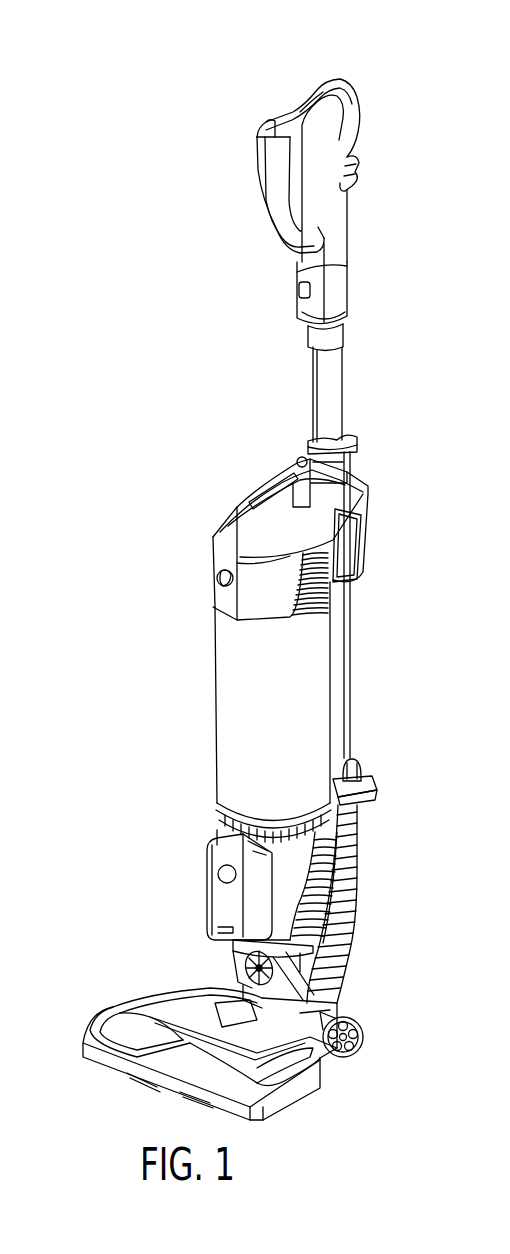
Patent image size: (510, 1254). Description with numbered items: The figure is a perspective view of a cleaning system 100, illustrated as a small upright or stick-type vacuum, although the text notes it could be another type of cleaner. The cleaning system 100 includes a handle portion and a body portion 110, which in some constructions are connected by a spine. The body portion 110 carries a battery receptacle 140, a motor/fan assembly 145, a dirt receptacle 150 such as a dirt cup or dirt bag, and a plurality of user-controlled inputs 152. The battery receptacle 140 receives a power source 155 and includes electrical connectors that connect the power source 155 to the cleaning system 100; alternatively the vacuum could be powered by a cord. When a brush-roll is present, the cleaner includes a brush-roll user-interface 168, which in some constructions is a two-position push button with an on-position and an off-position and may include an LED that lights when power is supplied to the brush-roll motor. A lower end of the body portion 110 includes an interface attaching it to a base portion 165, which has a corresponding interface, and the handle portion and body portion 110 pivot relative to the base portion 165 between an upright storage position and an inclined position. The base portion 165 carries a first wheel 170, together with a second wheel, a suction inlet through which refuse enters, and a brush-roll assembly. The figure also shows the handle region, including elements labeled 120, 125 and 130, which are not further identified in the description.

The cleaning system 100 is at (206, 93).
The body portion 110 is at (188, 789).
The handle 120 is at (333, 57).
The wand 125 is at (277, 308).
The grip 130 is at (288, 108).
The battery receptacle 140 is at (175, 867).
The motor/fan assembly 145 is at (213, 584).
The dirt receptacle 150 is at (221, 732).
The user-controlled inputs 152 is at (360, 443).
The power source 155 is at (206, 913).
The base portion 165 is at (99, 1000).
The brush-roll user-interface 168 is at (367, 480).
The first wheel 170 is at (353, 1053).